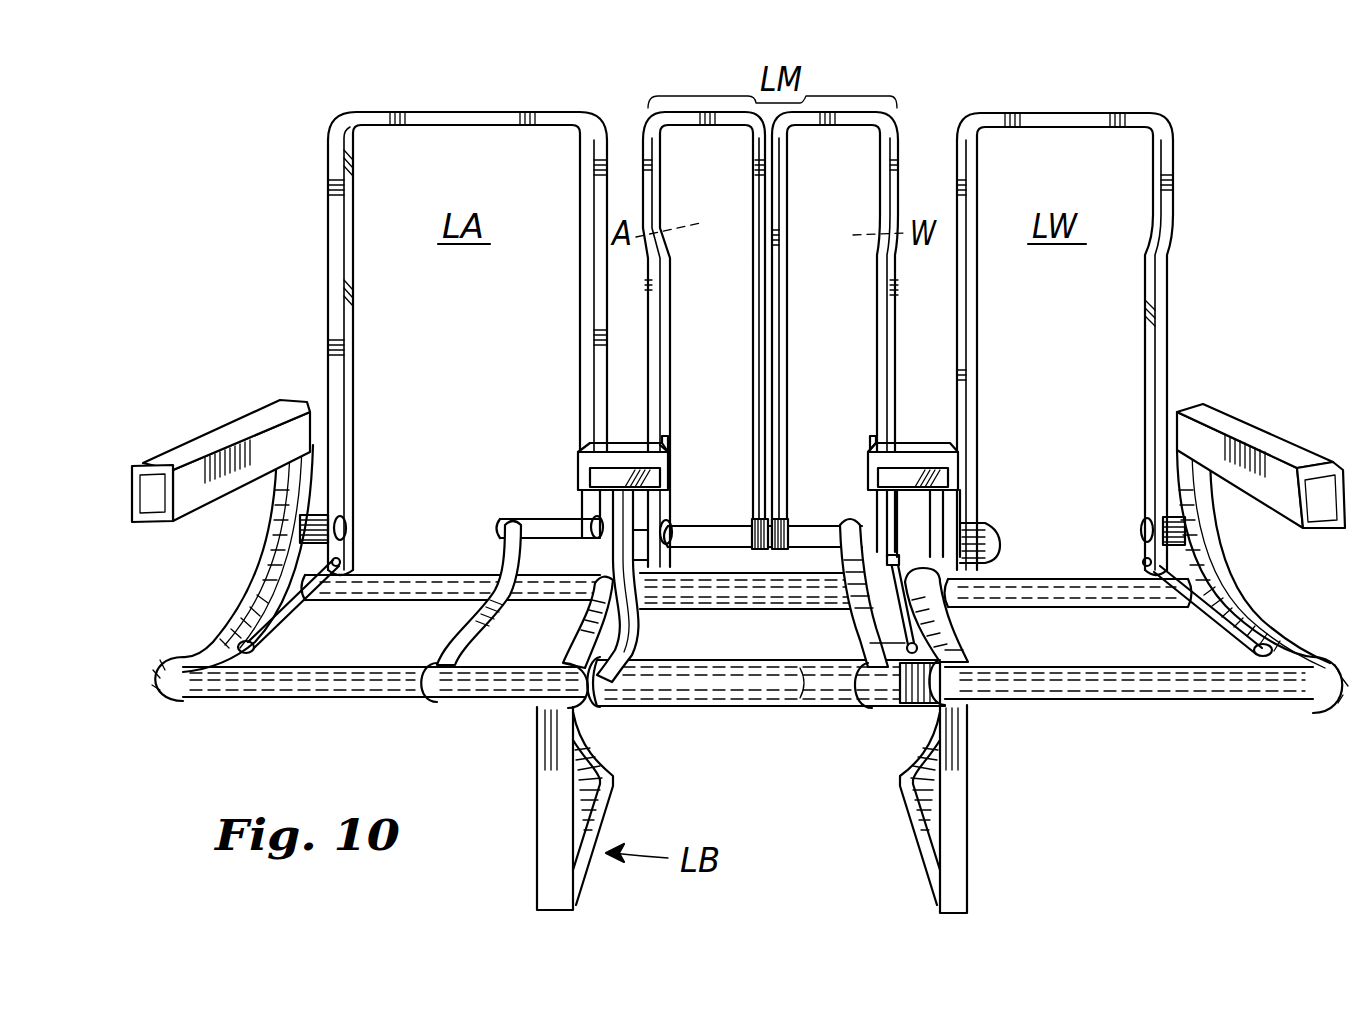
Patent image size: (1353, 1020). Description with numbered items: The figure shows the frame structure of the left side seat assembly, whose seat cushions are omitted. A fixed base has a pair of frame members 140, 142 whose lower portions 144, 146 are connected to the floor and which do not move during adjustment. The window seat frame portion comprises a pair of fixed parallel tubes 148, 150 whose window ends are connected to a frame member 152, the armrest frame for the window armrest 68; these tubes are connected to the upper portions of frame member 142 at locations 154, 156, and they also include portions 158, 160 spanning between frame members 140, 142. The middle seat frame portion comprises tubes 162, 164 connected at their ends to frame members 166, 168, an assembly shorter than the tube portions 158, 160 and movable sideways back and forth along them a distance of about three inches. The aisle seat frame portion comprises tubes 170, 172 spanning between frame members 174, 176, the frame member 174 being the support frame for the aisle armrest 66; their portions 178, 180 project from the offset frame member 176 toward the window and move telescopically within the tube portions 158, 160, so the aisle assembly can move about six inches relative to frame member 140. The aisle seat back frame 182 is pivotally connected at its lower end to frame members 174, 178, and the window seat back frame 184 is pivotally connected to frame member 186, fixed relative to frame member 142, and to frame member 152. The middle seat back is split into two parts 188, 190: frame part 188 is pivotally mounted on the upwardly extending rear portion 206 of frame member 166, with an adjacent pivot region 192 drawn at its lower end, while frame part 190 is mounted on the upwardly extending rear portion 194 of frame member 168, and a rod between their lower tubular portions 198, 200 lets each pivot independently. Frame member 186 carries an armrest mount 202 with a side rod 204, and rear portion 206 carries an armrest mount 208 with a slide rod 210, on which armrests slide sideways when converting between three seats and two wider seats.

The aisle armrest 66 is at (240, 430).
The window armrest 68 is at (1262, 440).
The frame member 140 is at (545, 765).
The frame member 142 is at (960, 800).
The lower portion 144 is at (600, 800).
The lower portion 146 is at (920, 820).
The tube 148 is at (1063, 595).
The tube 150 is at (1130, 680).
The frame member 152 is at (1265, 615).
The location 154 is at (965, 598).
The location 156 is at (950, 672).
The tube portion 158 is at (850, 613).
The tube portion 160 is at (905, 700).
The tube 162 is at (690, 590).
The tube 164 is at (660, 690).
The frame member 166 is at (605, 630).
The frame member 168 is at (810, 685).
The tube 170 is at (405, 580).
The tube 172 is at (300, 675).
The frame member 174 is at (262, 595).
The frame member 176 is at (465, 590).
The tube portion 178 is at (566, 582).
The tube portion 180 is at (478, 682).
The seat back frame 182 is at (353, 338).
The seat back frame 184 is at (978, 313).
The frame member 186 is at (955, 520).
The seat back frame part 188 is at (660, 323).
The seat back frame part 190 is at (878, 320).
The pivot tube end 192 is at (665, 520).
The upwardly extending rear portion 194 is at (850, 515).
The lower tubular portion 198 is at (720, 528).
The lower tubular portion 200 is at (793, 530).
The armrest mount 202 is at (945, 478).
The side rod 204 is at (955, 450).
The upwardly extending rear portion 206 is at (620, 510).
The armrest mount 208 is at (607, 473).
The slide rod 210 is at (640, 448).